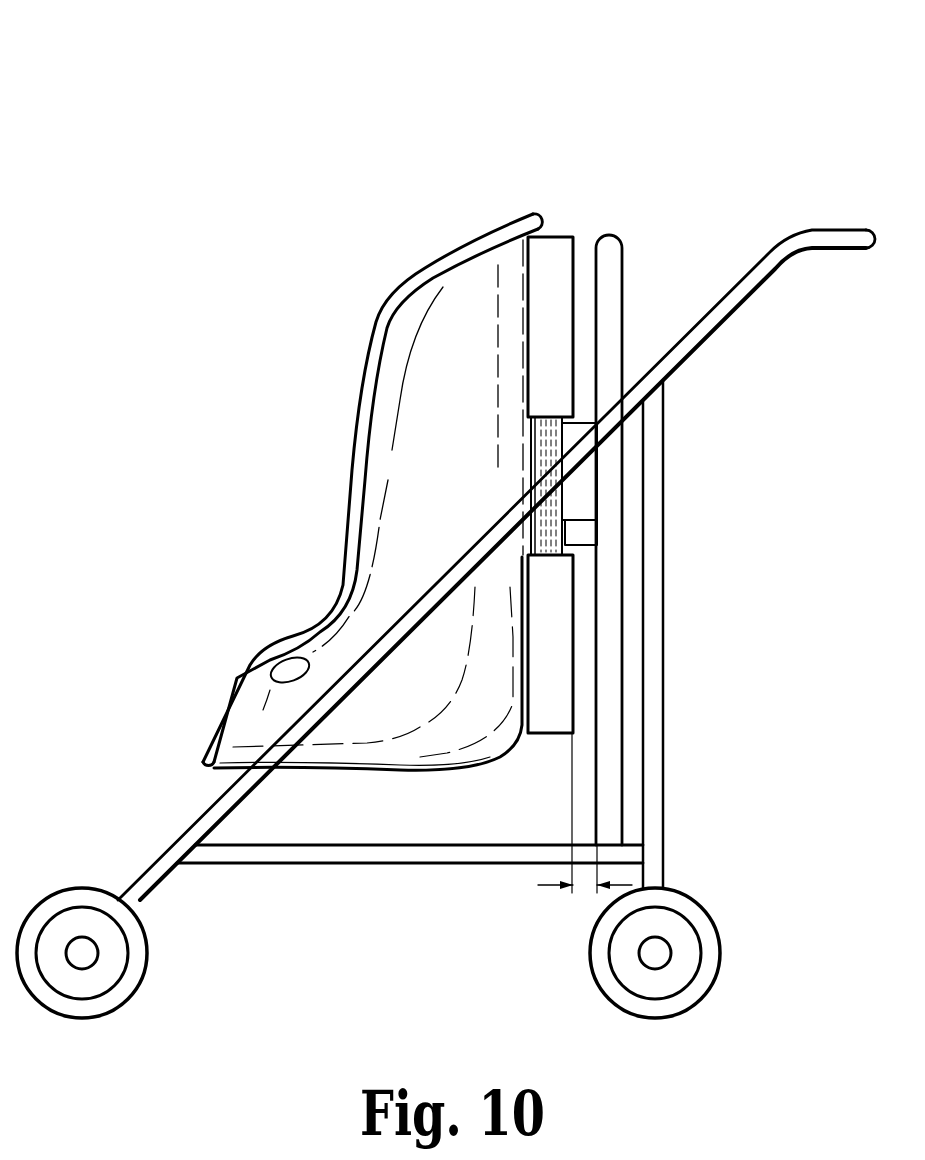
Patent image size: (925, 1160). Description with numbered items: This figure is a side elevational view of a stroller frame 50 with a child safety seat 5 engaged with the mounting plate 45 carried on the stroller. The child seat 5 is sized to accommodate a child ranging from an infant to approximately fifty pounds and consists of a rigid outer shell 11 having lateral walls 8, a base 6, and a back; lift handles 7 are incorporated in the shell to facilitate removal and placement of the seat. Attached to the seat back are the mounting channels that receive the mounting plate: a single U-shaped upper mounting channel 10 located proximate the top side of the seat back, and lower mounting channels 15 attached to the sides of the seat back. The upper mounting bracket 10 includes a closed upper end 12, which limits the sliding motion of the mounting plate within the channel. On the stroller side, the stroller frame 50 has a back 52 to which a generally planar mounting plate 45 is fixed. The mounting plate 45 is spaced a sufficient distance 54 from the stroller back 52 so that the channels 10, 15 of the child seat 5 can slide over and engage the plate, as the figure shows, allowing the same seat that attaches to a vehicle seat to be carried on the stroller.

The stroller frame 50 is at (603, 67).
The child safety seat 5 is at (344, 271).
The base 6 is at (347, 767).
The lift handles 7 is at (267, 683).
The lateral walls 8 is at (350, 497).
The upper mounting channel 10 is at (575, 248).
The rigid outer shell 11 is at (445, 323).
The closed upper end 12 is at (563, 230).
The lower mounting channels 15 is at (550, 737).
The mounting plate 45 is at (555, 428).
The stroller back 52 is at (620, 290).
The distance 54 is at (583, 887).